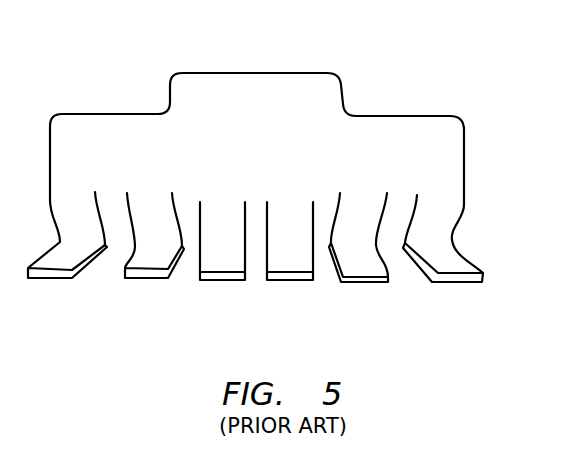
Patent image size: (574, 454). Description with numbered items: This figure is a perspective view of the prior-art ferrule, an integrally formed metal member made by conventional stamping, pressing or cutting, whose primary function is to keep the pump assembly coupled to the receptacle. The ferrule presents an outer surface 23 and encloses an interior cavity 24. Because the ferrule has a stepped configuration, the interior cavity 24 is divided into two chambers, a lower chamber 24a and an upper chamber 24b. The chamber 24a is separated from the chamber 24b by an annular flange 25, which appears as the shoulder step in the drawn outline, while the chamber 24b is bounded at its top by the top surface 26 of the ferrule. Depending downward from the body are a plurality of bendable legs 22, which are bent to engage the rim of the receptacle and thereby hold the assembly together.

The bendable depending legs 22 is at (463, 258).
The outer surface 23 is at (464, 151).
The interior cavity 24 is at (194, 160).
The chamber 24a is at (436, 134).
The chamber 24b is at (300, 91).
The annular flange 25 is at (100, 113).
The top surface 26 is at (208, 72).